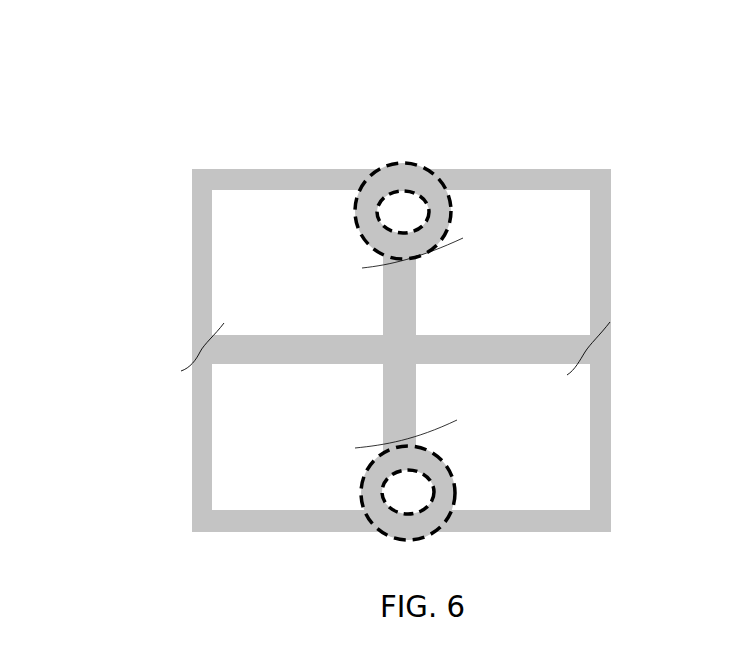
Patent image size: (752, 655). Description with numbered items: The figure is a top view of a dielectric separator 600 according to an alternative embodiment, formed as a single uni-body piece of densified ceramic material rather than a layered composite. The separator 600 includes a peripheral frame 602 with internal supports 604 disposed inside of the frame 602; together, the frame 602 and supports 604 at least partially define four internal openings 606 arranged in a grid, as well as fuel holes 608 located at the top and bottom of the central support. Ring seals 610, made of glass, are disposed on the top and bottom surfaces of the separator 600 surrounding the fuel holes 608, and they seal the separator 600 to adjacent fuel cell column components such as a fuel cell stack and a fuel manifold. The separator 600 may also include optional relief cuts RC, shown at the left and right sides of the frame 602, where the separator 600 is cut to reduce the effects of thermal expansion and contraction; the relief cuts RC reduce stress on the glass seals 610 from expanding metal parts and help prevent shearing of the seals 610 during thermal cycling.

The dielectric separator 600 is at (371, 312).
The peripheral frame 602 is at (202, 412).
The internal supports 604 is at (305, 350).
The internal openings 606 is at (311, 276).
The fuel holes 608 is at (394, 189).
The ring seals 610 is at (440, 180).
The relief cuts RC is at (210, 350).